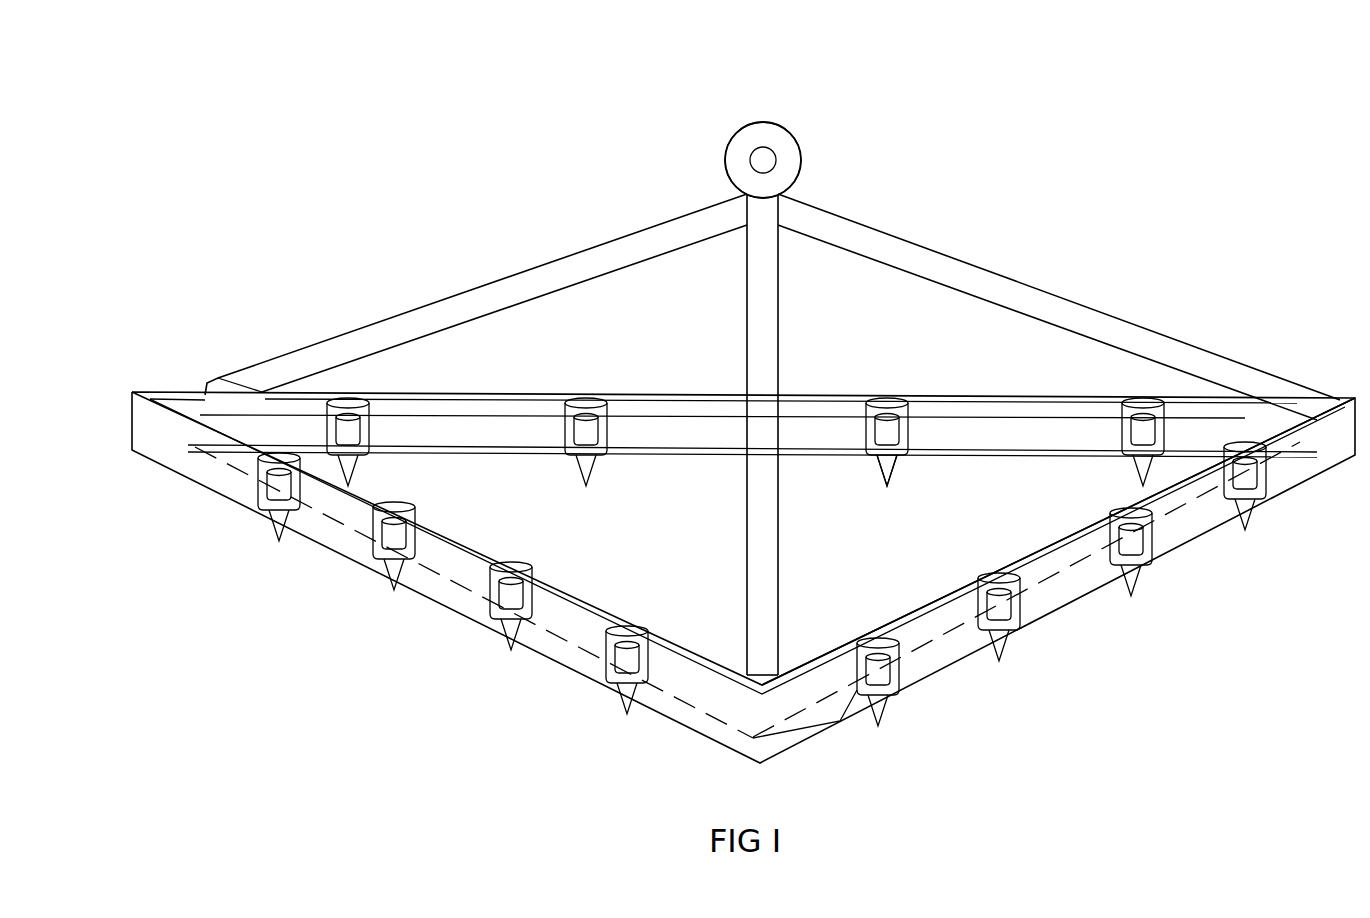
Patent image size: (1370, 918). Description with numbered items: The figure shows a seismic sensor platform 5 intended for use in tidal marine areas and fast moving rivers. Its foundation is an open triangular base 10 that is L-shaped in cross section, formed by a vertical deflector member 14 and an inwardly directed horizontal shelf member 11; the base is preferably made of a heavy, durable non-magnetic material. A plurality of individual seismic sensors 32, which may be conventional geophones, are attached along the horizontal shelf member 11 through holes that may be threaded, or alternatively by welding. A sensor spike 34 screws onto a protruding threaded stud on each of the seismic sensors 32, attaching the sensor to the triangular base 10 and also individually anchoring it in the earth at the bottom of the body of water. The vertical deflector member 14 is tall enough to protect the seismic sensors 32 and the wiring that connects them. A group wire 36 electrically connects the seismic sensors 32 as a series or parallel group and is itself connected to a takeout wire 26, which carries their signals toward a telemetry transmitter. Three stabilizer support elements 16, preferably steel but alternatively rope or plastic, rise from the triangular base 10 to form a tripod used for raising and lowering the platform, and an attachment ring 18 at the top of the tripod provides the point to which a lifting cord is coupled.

The seismic sensor platform 5 is at (707, 100).
The open triangular base 10 is at (674, 377).
The horizontal shelf member 11 is at (647, 455).
The vertical deflector member 14 is at (723, 657).
The stabilizer support elements 16 is at (585, 250).
The attachment ring 18 is at (802, 157).
The takeout wire 26 is at (350, 330).
The seismic sensors 32 is at (227, 527).
The sensor spike 34 is at (887, 484).
The group wire 36 is at (980, 415).